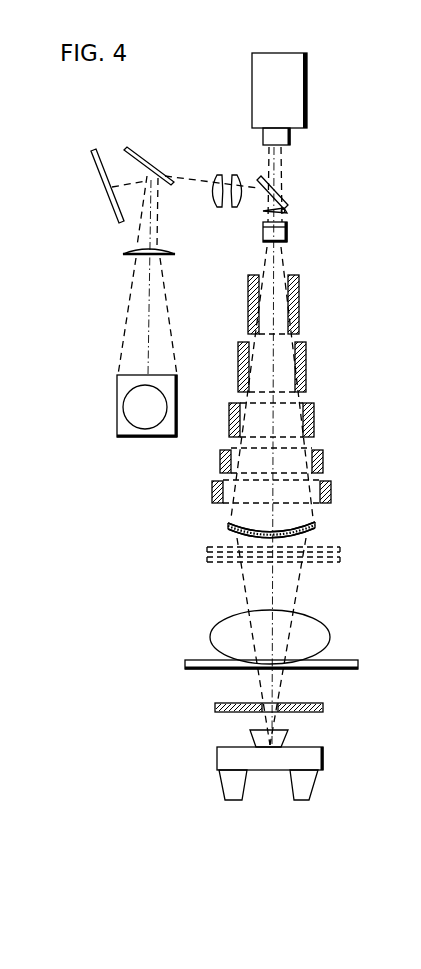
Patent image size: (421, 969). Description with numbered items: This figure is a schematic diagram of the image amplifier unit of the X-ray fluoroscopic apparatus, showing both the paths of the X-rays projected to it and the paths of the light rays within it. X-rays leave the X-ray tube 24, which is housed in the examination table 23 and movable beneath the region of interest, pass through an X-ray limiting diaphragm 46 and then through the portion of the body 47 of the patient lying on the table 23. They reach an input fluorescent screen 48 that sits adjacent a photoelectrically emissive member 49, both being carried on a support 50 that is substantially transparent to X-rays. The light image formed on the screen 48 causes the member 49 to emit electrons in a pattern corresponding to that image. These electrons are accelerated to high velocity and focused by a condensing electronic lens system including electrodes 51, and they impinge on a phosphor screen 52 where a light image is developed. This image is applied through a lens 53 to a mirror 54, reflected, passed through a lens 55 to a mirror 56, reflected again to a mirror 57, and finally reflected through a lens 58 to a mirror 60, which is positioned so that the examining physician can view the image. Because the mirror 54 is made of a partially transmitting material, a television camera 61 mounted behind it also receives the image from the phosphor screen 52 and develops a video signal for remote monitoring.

The television camera 61 is at (307, 115).
The mirror 54 is at (285, 201).
The lens 53 is at (282, 213).
The phosphor screen 52 is at (289, 229).
The lens 55 is at (231, 207).
The mirror 56 is at (103, 178).
The mirror 57 is at (160, 173).
The lens 58 is at (130, 250).
The mirror 60 is at (117, 385).
The electrodes 51 is at (247, 315).
The input fluorescent screen 48 is at (316, 525).
The photoelectrically emissive member 49 is at (315, 523).
The support 50 is at (317, 528).
The body 47 is at (330, 634).
The examination table 23 is at (358, 662).
The X-ray limiting diaphragm 46 is at (324, 707).
The X-ray tube 24 is at (323, 753).